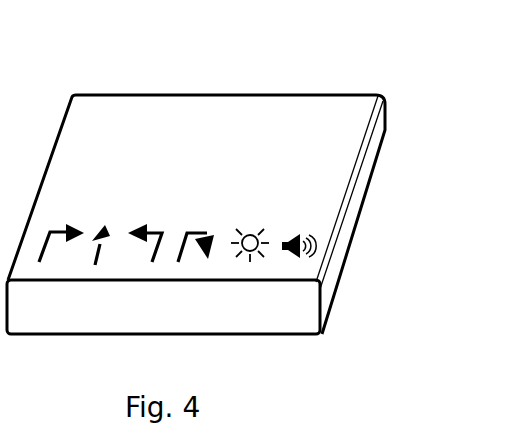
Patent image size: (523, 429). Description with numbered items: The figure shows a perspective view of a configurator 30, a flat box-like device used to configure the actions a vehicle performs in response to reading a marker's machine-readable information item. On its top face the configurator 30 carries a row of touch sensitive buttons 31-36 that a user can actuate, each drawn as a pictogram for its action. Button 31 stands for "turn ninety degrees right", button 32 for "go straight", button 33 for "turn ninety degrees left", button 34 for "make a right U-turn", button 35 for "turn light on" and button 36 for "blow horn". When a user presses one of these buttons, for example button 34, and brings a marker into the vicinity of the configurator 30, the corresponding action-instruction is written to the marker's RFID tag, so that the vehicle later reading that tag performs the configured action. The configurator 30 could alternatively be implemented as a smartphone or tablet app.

The configurator 30 is at (196, 188).
The button 31 is at (73, 224).
The button 32 is at (107, 275).
The button 33 is at (161, 224).
The button 34 is at (198, 279).
The button 35 is at (262, 226).
The button 36 is at (296, 279).